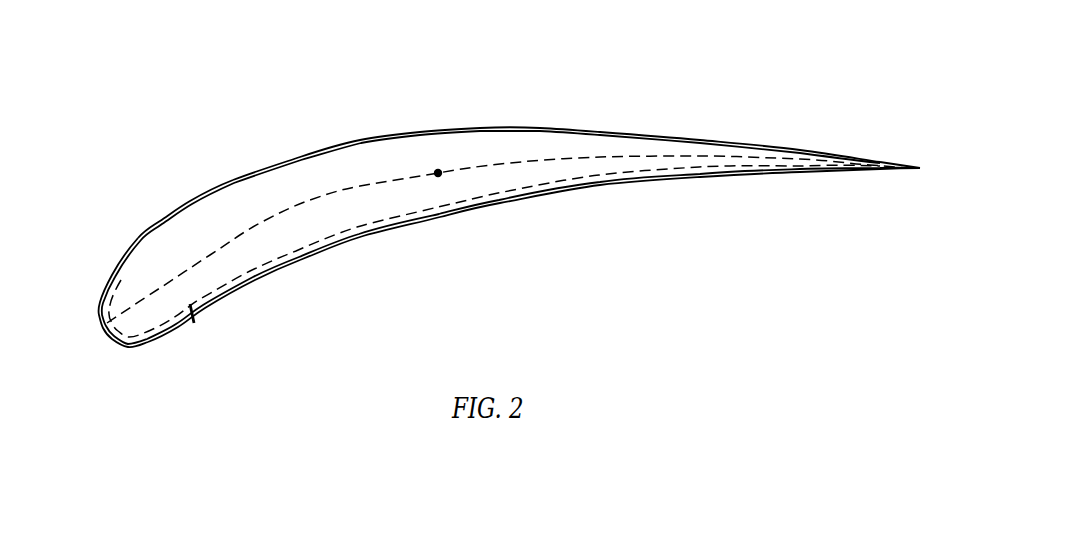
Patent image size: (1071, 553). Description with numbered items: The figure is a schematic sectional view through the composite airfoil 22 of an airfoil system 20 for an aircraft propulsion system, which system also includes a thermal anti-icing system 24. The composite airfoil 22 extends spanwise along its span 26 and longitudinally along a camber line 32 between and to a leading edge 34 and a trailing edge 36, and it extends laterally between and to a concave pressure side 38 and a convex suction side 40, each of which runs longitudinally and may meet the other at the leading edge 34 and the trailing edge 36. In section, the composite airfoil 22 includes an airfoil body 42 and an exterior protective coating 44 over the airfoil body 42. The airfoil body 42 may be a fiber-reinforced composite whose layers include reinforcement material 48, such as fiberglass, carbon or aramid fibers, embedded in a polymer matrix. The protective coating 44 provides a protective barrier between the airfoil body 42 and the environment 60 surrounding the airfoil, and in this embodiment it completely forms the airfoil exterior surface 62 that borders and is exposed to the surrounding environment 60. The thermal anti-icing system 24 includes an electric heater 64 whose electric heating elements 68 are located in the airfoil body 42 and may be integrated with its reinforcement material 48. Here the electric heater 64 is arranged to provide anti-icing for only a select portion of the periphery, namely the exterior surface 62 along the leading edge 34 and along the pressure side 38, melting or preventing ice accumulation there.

The airfoil system 20 is at (110, 65).
The composite airfoil 22 is at (116, 181).
The thermal anti-icing system 24 is at (203, 361).
The span 26 is at (439, 170).
The camber line 32 is at (300, 203).
The leading edge 34 is at (108, 340).
The trailing edge 36 is at (922, 170).
The pressure side 38 is at (363, 238).
The suction side 40 is at (358, 140).
The airfoil body 42 is at (185, 194).
The exterior protective coating 44 is at (216, 170).
The reinforcement material 48 is at (530, 143).
The environment 60 is at (383, 59).
The exterior surface 62 is at (247, 288).
The electric heater 64 is at (194, 326).
The electric heating elements 68 is at (433, 203).